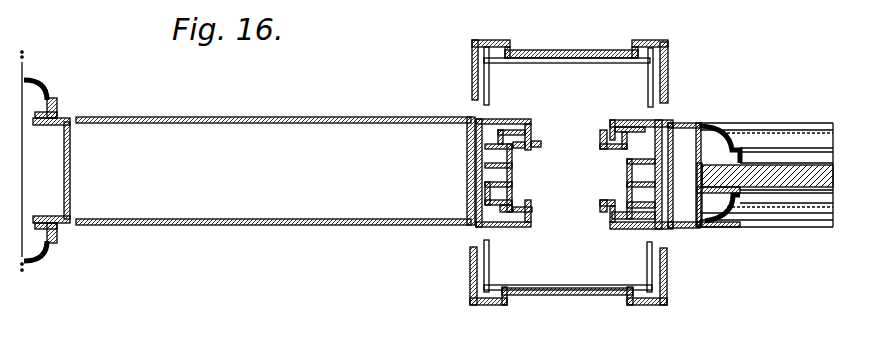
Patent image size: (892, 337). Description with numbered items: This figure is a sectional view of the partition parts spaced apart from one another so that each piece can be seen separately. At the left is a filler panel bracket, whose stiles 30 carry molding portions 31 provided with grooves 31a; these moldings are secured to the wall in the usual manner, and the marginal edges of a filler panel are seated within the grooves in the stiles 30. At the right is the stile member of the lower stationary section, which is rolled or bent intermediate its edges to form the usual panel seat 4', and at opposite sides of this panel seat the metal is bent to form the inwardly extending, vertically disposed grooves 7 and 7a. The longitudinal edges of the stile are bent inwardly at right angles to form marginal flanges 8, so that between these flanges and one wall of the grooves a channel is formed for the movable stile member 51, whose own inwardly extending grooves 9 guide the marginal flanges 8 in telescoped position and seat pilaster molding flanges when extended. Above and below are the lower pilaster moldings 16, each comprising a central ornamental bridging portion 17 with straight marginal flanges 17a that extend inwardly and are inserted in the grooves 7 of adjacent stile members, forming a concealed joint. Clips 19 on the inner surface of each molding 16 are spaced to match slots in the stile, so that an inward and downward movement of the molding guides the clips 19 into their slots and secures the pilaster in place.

The panel seat 4' is at (765, 162).
The inwardly extending groove 7 is at (663, 142).
The inwardly extending groove 7a is at (669, 203).
The marginal flange 8 is at (608, 128).
The inwardly extending groove 9 is at (601, 146).
The lower pilaster molding 16 is at (668, 45).
The bridging portion 17 is at (565, 52).
The marginal flange 17a is at (677, 262).
The clip 19 is at (490, 83).
The stile 30 is at (240, 123).
The molding portion 31 is at (44, 91).
The groove 31a is at (58, 103).
The connector member 51 is at (630, 174).